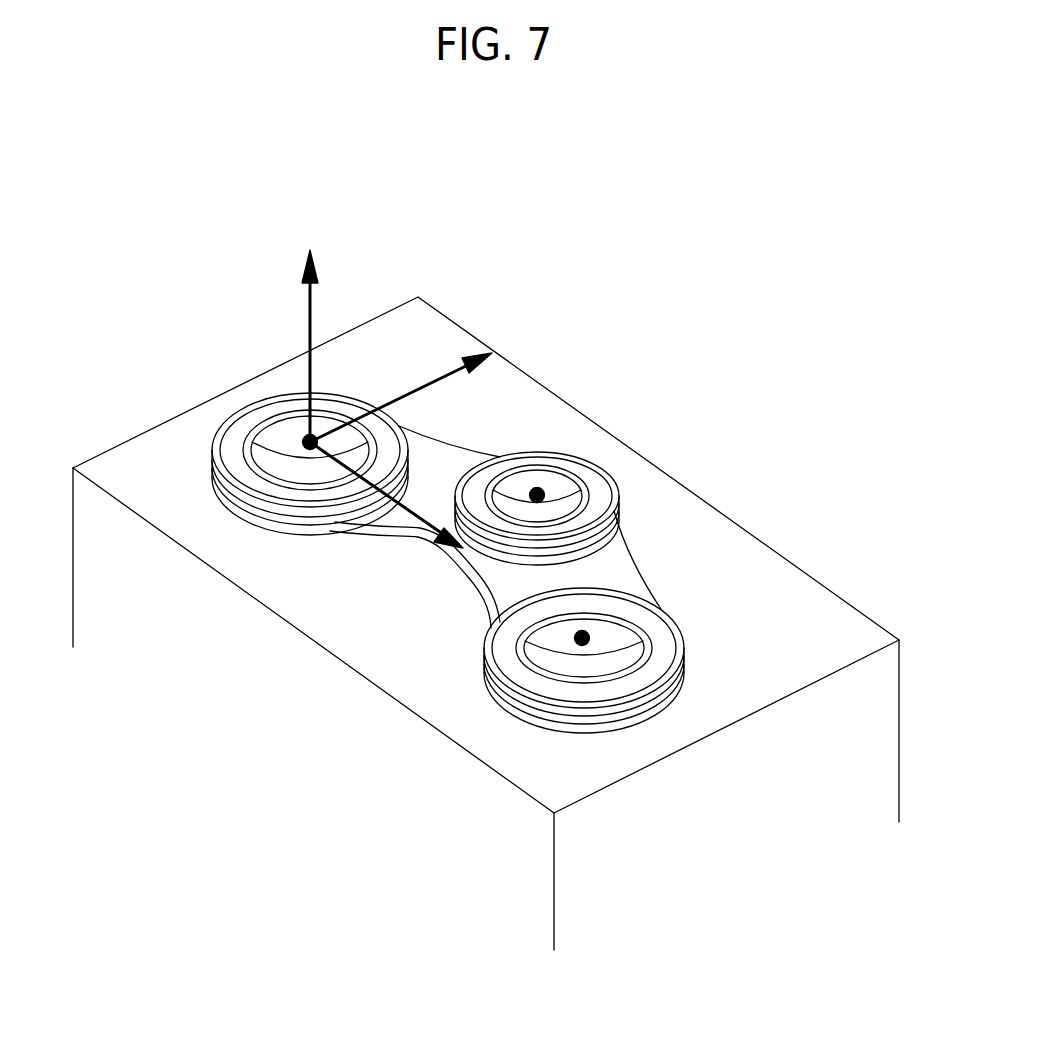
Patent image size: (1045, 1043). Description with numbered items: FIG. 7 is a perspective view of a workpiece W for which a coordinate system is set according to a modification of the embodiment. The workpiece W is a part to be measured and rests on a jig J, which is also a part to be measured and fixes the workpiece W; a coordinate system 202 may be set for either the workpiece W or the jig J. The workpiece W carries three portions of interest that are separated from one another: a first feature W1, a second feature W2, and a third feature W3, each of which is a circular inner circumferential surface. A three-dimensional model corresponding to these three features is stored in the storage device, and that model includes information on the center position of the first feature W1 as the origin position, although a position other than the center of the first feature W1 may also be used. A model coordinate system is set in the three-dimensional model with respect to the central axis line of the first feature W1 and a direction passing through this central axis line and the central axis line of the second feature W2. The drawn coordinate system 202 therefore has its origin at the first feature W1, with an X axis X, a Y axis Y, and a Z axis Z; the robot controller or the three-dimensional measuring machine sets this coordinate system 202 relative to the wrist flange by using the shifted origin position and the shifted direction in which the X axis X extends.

The coordinate system 202 is at (397, 400).
The jig J is at (800, 567).
The workpiece W is at (457, 525).
The first feature W1 is at (268, 427).
The second feature W2 is at (632, 622).
The third feature W3 is at (577, 483).
The X axis X is at (392, 512).
The Y axis Y is at (452, 370).
The Z axis Z is at (310, 330).